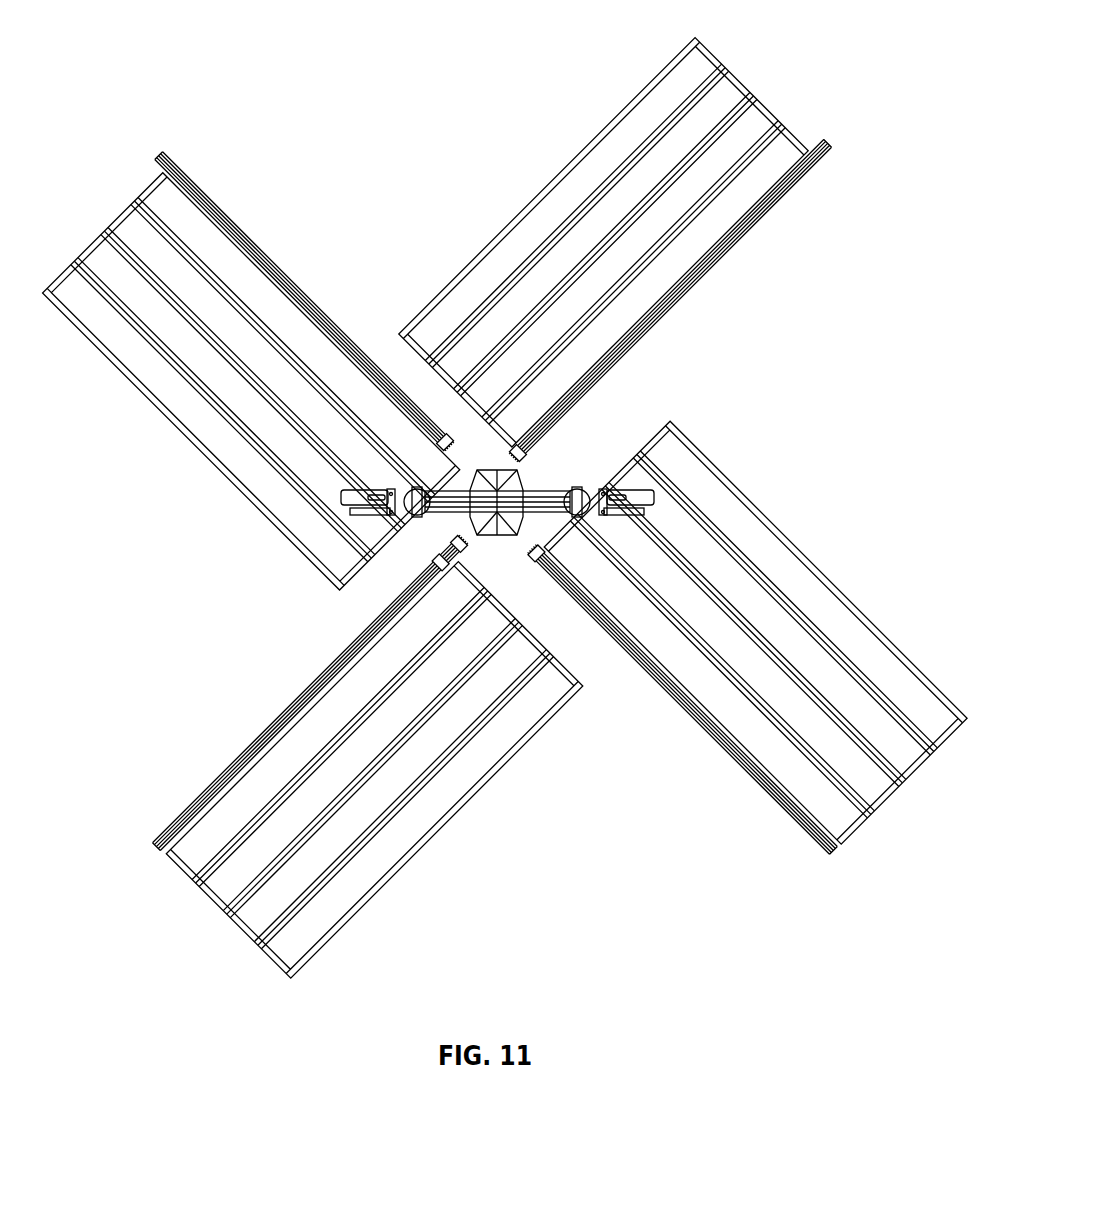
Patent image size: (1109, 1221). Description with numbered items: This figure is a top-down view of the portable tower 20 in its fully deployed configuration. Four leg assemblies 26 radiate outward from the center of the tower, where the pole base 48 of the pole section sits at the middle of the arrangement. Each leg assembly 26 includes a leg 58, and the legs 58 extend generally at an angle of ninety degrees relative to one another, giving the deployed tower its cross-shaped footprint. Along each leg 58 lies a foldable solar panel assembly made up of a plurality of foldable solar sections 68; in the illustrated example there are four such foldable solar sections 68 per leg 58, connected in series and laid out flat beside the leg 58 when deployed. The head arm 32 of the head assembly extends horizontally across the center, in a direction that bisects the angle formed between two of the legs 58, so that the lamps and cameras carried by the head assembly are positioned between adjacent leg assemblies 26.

The portable tower 20 is at (800, 452).
The leg assembly 26 is at (322, 292).
The head arm 32 is at (548, 473).
The pole base 48 is at (500, 542).
The leg 58 is at (233, 208).
The foldable solar section 68 is at (587, 122).